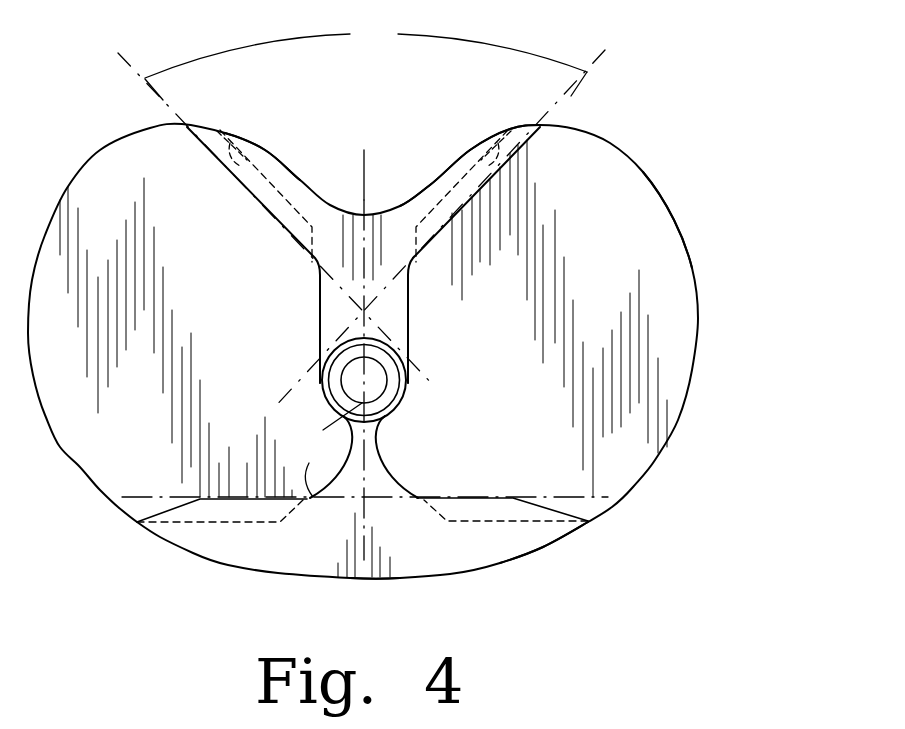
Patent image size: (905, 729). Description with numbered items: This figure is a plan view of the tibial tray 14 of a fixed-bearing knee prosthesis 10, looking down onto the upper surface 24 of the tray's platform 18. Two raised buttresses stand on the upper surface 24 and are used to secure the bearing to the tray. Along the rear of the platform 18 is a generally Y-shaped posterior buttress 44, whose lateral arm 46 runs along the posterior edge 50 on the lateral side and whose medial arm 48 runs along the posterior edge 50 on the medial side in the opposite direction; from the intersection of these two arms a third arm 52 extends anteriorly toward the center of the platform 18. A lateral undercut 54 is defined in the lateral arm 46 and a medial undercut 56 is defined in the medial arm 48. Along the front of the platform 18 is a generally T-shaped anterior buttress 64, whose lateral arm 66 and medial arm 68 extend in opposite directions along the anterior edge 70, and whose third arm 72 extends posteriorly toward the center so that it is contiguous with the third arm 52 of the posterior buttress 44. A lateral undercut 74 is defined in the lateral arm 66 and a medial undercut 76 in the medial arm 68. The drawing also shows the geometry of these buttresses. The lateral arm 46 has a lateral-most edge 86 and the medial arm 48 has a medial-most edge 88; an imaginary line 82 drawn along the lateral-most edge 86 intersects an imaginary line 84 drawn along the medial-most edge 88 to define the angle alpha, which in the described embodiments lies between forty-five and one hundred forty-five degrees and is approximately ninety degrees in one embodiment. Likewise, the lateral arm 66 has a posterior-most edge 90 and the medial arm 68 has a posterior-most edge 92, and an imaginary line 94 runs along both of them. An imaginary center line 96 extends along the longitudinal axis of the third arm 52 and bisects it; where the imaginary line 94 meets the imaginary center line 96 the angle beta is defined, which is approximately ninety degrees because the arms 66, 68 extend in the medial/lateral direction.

The knee prosthesis 10 is at (776, 120).
The tibial tray 14 is at (637, 144).
The platform 18 is at (668, 240).
The upper surface 24 is at (648, 208).
The posterior buttress 44 is at (343, 266).
The lateral arm 46 is at (470, 152).
The medial arm 48 is at (263, 159).
The posterior edge 50 is at (405, 200).
The third arm 52 is at (398, 332).
The lateral undercut 54 is at (485, 127).
The medial undercut 56 is at (243, 127).
The anterior buttress 64 is at (338, 520).
The lateral arm 66 is at (527, 543).
The medial arm 68 is at (188, 542).
The anterior edge 70 is at (360, 578).
The third arm 72 is at (378, 471).
The lateral undercut 74 is at (483, 518).
The medial undercut 76 is at (227, 518).
The imaginary line 82 is at (571, 96).
The imaginary line 84 is at (159, 98).
The lateral-most edge 86 is at (481, 192).
The medial-most edge 88 is at (259, 203).
The posterior-most edge 90 is at (470, 498).
The posterior-most edge 92 is at (233, 498).
The imaginary line 94 is at (600, 497).
The imaginary center line 96 is at (383, 556).